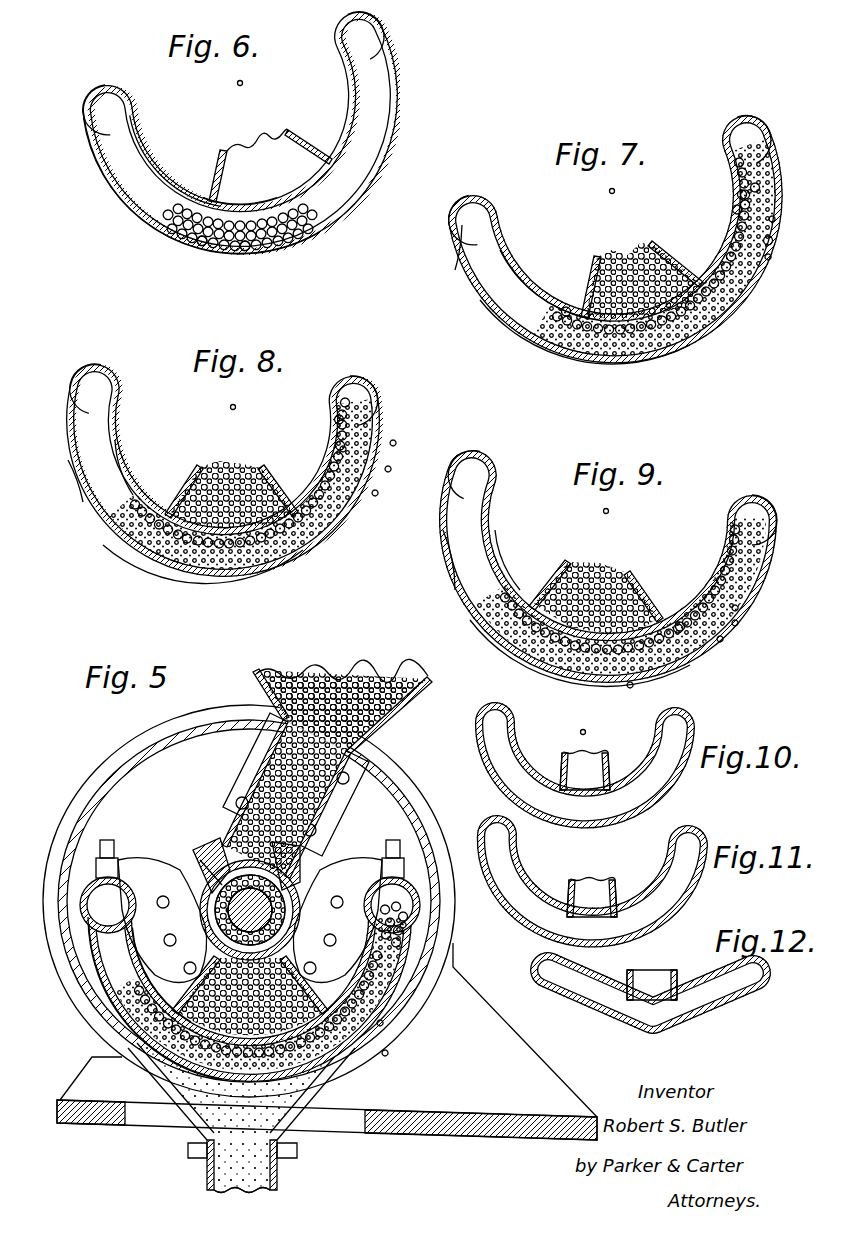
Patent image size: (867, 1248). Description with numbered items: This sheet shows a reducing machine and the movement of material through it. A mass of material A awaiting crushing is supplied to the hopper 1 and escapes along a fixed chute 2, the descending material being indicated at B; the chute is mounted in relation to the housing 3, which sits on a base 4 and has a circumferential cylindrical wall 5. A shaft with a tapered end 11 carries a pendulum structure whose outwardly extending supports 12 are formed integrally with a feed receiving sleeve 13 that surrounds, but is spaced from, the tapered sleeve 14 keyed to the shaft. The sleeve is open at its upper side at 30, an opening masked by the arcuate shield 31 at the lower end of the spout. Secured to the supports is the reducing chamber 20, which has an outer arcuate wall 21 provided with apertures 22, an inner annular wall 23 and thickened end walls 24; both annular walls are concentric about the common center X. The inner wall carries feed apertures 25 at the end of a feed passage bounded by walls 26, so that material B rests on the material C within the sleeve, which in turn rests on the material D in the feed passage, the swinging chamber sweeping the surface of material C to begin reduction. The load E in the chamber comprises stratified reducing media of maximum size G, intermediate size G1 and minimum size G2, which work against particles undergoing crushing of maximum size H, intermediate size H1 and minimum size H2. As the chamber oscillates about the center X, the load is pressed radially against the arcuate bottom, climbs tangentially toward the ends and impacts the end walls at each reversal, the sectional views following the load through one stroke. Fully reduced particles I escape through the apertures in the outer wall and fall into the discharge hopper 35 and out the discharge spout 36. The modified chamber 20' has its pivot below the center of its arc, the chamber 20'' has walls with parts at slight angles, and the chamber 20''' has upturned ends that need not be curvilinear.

In FIG. 5, the hopper 1 is at (405, 690).
In FIG. 5, the fixed chute 2 is at (345, 792).
In FIG. 5, the housing 3 is at (425, 802).
In FIG. 5, the base 4 is at (483, 1112).
In FIG. 5, the circumferential cylindrical wall 5 is at (452, 824).
In FIG. 5, the tapered end 11 is at (222, 916).
In FIG. 5, the supports 12 is at (345, 872).
In FIG. 5, the feed receiving sleeve 13 is at (305, 885).
In FIG. 5, the tapered sleeve 14 is at (292, 870).
In FIG. 6, the reducing chamber 20 is at (227, 137).
In FIG. 7, the reducing chamber 20 is at (607, 247).
In FIG. 8, the reducing chamber 20 is at (230, 470).
In FIG. 9, the reducing chamber 20 is at (612, 570).
In FIG. 5, the reducing chamber 20 is at (250, 948).
In FIG. 10, the chamber 20' is at (593, 767).
In FIG. 11, the chamber 20'' is at (606, 890).
In FIG. 12, the chamber 20''' is at (650, 995).
In FIG. 6, the outer arcuate wall 21 is at (90, 165).
In FIG. 7, the outer arcuate wall 21 is at (460, 262).
In FIG. 8, the outer arcuate wall 21 is at (100, 520).
In FIG. 9, the outer arcuate wall 21 is at (440, 522).
In FIG. 5, the outer arcuate wall 21 is at (92, 980).
In FIG. 6, the apertures 22 is at (393, 125).
In FIG. 7, the apertures 22 is at (512, 318).
In FIG. 8, the apertures 22 is at (135, 546).
In FIG. 9, the apertures 22 is at (458, 580).
In FIG. 5, the apertures 22 is at (108, 1018).
In FIG. 6, the inner annular wall 23 is at (128, 148).
In FIG. 7, the inner annular wall 23 is at (510, 268).
In FIG. 8, the inner annular wall 23 is at (115, 446).
In FIG. 9, the inner annular wall 23 is at (496, 538).
In FIG. 5, the inner annular wall 23 is at (132, 952).
In FIG. 6, the thickened end walls 24 is at (362, 14).
In FIG. 7, the thickened end walls 24 is at (745, 118).
In FIG. 8, the thickened end walls 24 is at (372, 378).
In FIG. 9, the thickened end walls 24 is at (755, 500).
In FIG. 5, the thickened end walls 24 is at (412, 893).
In FIG. 6, the feed apertures 25 is at (275, 196).
In FIG. 6, the walls 26 is at (300, 142).
In FIG. 7, the walls 26 is at (660, 248).
In FIG. 8, the walls 26 is at (272, 480).
In FIG. 9, the walls 26 is at (638, 576).
In FIG. 5, the walls 26 is at (285, 980).
In FIG. 5, the opening 30 is at (212, 860).
In FIG. 5, the arcuate shield 31 is at (205, 875).
In FIG. 5, the discharge hopper 35 is at (158, 1125).
In FIG. 5, the discharge spout 36 is at (207, 1170).
In FIG. 5, the mass of material A is at (336, 700).
In FIG. 5, the feed material B is at (278, 772).
In FIG. 5, the feed material C is at (218, 860).
In FIG. 7, the feed material D is at (618, 258).
In FIG. 8, the feed material D is at (223, 466).
In FIG. 9, the feed material D is at (598, 575).
In FIG. 5, the feed material D is at (175, 985).
In FIG. 7, the load E is at (733, 230).
In FIG. 8, the load E is at (150, 530).
In FIG. 9, the load E is at (495, 600).
In FIG. 5, the load E is at (390, 1038).
In FIG. 6, the balls of maximum size G is at (300, 217).
In FIG. 7, the balls of maximum size G is at (566, 307).
In FIG. 8, the balls of maximum size G is at (336, 415).
In FIG. 9, the balls of maximum size G is at (680, 622).
In FIG. 5, the balls of maximum size G is at (410, 948).
In FIG. 6, the particles of intermediate size G1 is at (193, 233).
In FIG. 7, the particles of intermediate size G1 is at (755, 190).
In FIG. 8, the particles of intermediate size G1 is at (390, 440).
In FIG. 9, the particles of intermediate size G1 is at (720, 636).
In FIG. 5, the particles of intermediate size G1 is at (405, 922).
In FIG. 6, the particles of minimum size G2 is at (240, 246).
In FIG. 7, the particles of minimum size G2 is at (768, 246).
In FIG. 8, the particles of minimum size G2 is at (385, 466).
In FIG. 9, the particles of minimum size G2 is at (642, 685).
In FIG. 7, the particles of maximum size H is at (740, 241).
In FIG. 8, the particles of maximum size H is at (330, 468).
In FIG. 9, the particles of maximum size H is at (708, 600).
In FIG. 5, the particles of maximum size H is at (370, 1000).
In FIG. 7, the particles of intermediate size H1 is at (772, 216).
In FIG. 8, the particles of intermediate size H1 is at (340, 446).
In FIG. 9, the particles of intermediate size H1 is at (735, 605).
In FIG. 5, the particles of intermediate size H1 is at (380, 1020).
In FIG. 7, the particles of minimum size H2 is at (768, 254).
In FIG. 8, the particles of minimum size H2 is at (372, 490).
In FIG. 9, the particles of minimum size H2 is at (735, 620).
In FIG. 5, the particles of minimum size H2 is at (385, 1050).
In FIG. 5, the fully reduced particles I is at (278, 1172).
In FIG. 6, the common center X is at (238, 82).
In FIG. 7, the common center X is at (615, 191).
In FIG. 8, the common center X is at (233, 407).
In FIG. 9, the common center X is at (609, 511).